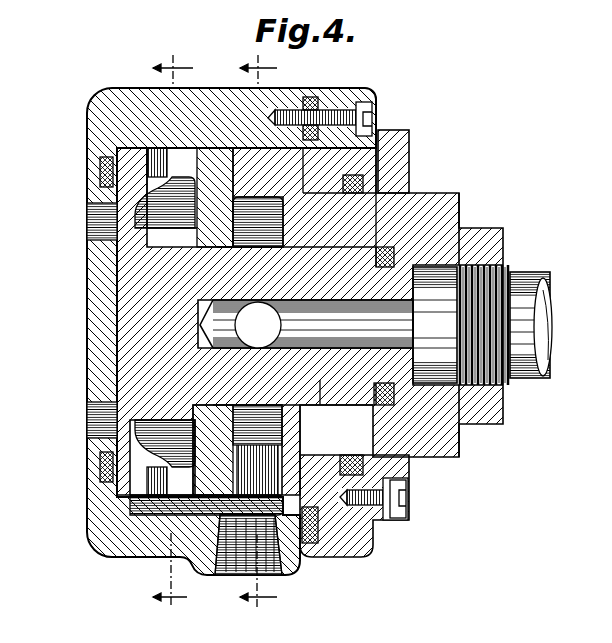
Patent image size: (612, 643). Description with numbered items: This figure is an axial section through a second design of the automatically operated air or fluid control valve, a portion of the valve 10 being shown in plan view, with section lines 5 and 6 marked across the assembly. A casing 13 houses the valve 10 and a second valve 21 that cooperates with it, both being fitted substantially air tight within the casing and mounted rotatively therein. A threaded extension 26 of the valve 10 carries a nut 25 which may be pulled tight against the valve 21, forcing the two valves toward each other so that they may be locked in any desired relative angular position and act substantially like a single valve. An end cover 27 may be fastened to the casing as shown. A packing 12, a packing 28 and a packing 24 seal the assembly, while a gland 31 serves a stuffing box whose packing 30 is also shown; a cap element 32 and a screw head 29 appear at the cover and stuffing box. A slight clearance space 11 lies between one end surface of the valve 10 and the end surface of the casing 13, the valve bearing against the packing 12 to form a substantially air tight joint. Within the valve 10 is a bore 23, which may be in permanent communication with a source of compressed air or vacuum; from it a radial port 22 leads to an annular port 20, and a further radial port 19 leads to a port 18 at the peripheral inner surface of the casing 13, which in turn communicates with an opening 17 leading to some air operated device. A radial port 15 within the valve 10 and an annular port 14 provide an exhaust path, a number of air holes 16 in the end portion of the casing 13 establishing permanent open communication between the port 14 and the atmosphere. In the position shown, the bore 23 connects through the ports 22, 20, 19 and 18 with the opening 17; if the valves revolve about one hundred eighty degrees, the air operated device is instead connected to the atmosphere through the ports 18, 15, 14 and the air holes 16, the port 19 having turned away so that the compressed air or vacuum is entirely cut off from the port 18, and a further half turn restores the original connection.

The valve 10 is at (217, 273).
The clearance space 11 is at (100, 168).
The packing 12 is at (100, 188).
The casing 13 is at (137, 115).
The annular port 14 is at (173, 425).
The radial port 15 is at (167, 157).
The air holes 16 is at (100, 226).
The opening 17 is at (250, 560).
The port 18 is at (172, 500).
The radial port 19 is at (268, 420).
The annular port 20 is at (283, 440).
The second valve 21 is at (365, 303).
The radial port 22 is at (306, 324).
The bore 23 is at (488, 238).
The packing 24 is at (385, 255).
The nut 25 is at (478, 268).
The threaded extension 26 is at (500, 275).
The end cover 27 is at (361, 148).
The packing 28 is at (313, 108).
The screw head 29 is at (358, 108).
The packing 30 is at (408, 463).
The gland 31 is at (406, 475).
The cap nut 32 is at (406, 507).
The section line 5— 5 is at (182, 334).
The section line 6— 6 is at (268, 334).